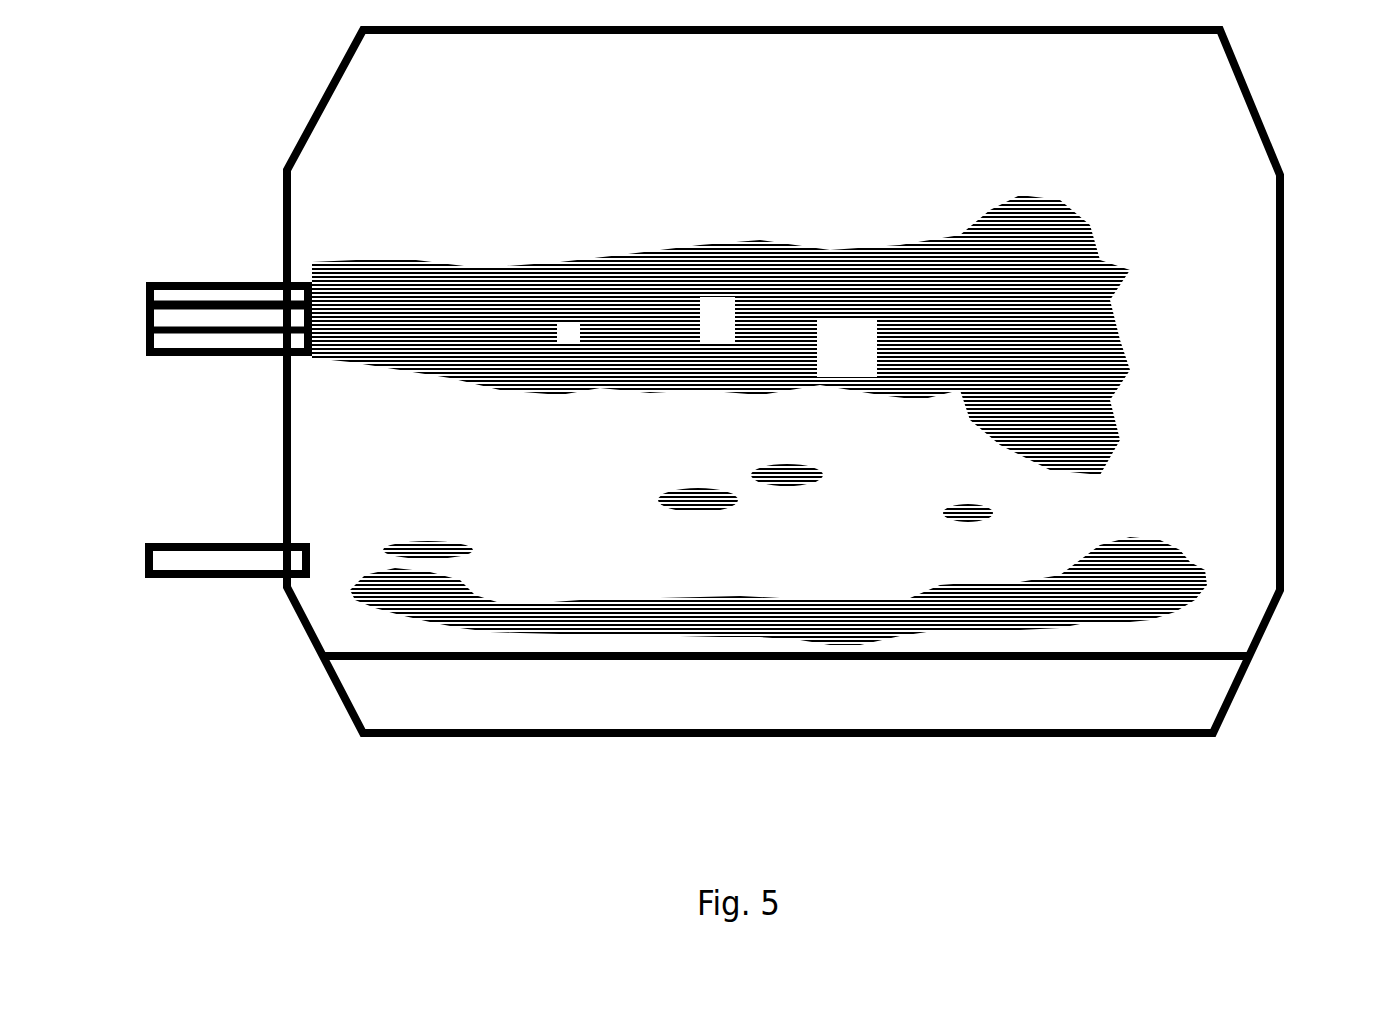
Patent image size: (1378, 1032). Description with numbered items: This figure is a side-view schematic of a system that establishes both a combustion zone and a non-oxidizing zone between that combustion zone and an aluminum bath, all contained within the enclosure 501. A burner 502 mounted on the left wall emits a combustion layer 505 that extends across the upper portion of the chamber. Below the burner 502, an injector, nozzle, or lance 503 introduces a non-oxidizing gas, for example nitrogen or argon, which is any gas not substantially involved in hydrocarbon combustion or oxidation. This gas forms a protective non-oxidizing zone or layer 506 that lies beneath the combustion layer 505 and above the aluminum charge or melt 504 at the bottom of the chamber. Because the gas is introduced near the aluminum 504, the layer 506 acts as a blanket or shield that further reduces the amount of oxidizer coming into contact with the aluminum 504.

The combustion chamber wall 501 is at (1247, 107).
The burner 502 is at (184, 287).
The injector, nozzle, or lance 503 is at (172, 545).
The aluminum charge or melt 504 is at (1210, 700).
The combustion layer 505 is at (690, 272).
The protective non-oxidizing zone or layer 506 is at (661, 594).